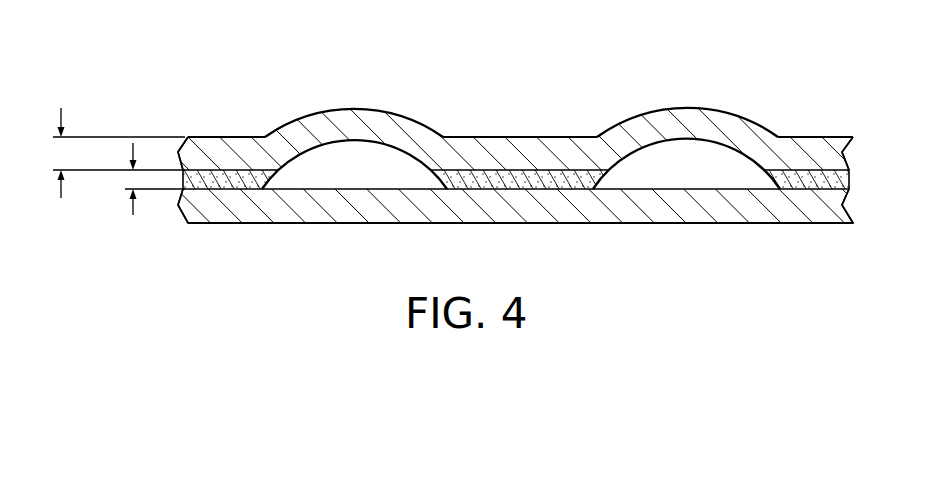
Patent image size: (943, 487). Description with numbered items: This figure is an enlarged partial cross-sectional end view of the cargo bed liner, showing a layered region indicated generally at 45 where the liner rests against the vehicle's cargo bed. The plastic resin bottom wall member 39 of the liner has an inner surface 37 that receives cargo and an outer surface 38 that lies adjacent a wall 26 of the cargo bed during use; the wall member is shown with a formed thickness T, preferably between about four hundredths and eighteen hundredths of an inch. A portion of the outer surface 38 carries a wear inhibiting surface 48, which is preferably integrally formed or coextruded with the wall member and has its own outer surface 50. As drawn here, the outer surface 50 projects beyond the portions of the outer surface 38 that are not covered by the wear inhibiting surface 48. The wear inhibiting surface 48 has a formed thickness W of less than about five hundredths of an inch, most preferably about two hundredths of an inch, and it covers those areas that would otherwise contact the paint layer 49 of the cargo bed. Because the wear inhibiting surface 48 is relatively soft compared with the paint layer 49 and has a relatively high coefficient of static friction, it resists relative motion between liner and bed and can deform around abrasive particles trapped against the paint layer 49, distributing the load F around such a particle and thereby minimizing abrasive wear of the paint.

The laminated keypad structure 45 is at (229, 82).
The inner surface 37 is at (310, 116).
The outer surface 38 is at (355, 150).
The bottom wall member 39 is at (460, 150).
The wear inhibiting surface 48 is at (558, 178).
The paint layer 49 is at (686, 189).
The wall 26 is at (343, 212).
The outer surface of wear inhibiting surface 50 is at (577, 190).
The load F is at (522, 128).
The formed thickness T is at (118, 153).
The formed thickness of wear inhibiting surface W is at (153, 198).